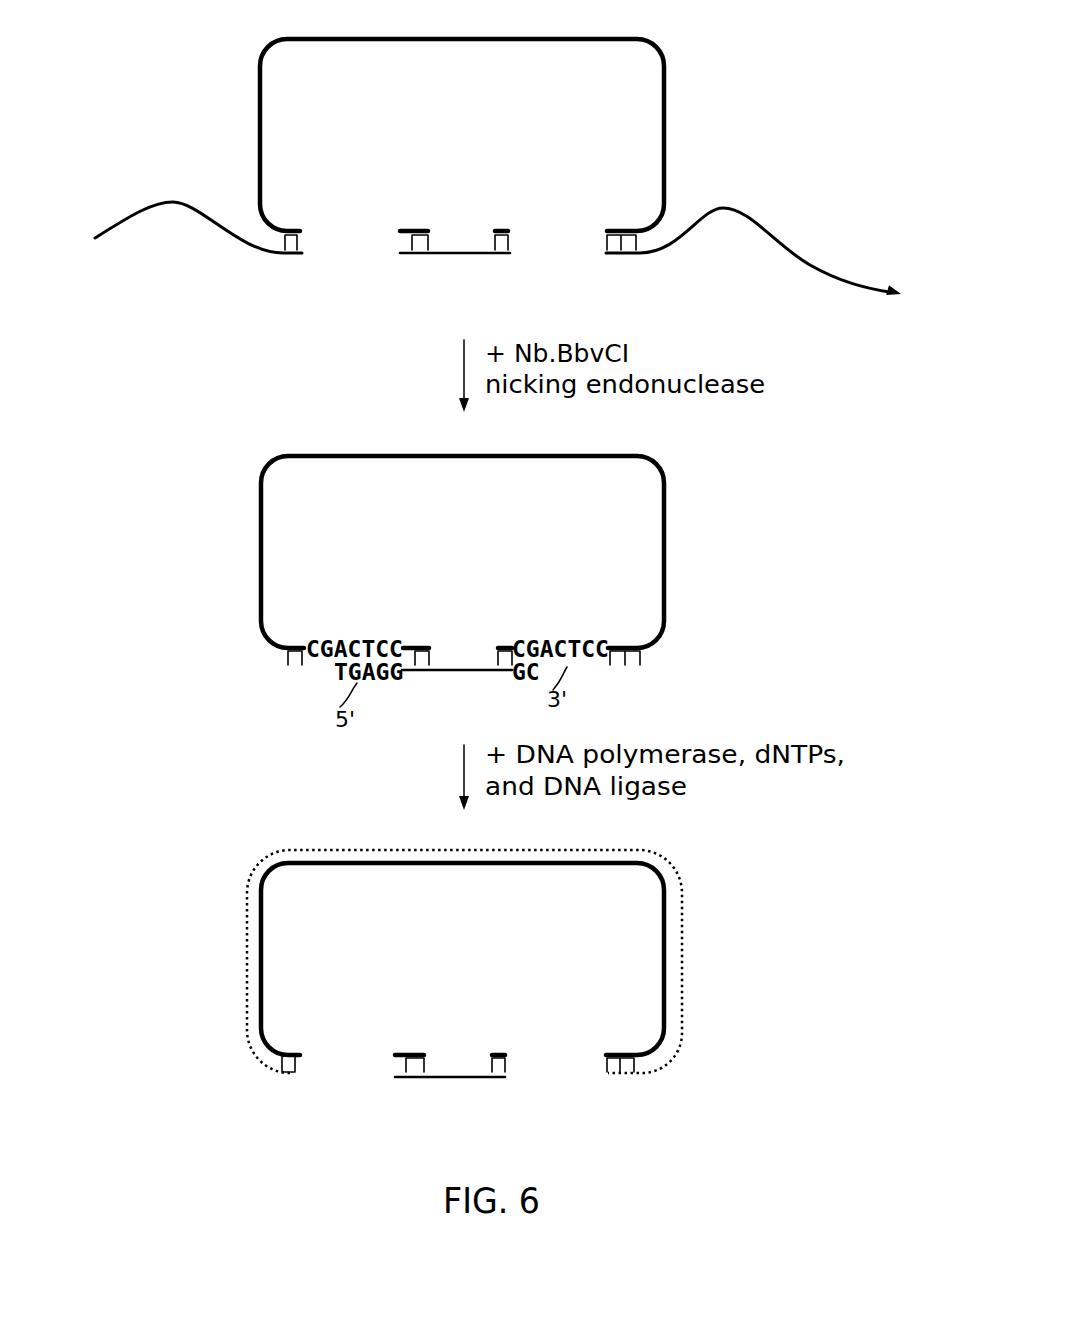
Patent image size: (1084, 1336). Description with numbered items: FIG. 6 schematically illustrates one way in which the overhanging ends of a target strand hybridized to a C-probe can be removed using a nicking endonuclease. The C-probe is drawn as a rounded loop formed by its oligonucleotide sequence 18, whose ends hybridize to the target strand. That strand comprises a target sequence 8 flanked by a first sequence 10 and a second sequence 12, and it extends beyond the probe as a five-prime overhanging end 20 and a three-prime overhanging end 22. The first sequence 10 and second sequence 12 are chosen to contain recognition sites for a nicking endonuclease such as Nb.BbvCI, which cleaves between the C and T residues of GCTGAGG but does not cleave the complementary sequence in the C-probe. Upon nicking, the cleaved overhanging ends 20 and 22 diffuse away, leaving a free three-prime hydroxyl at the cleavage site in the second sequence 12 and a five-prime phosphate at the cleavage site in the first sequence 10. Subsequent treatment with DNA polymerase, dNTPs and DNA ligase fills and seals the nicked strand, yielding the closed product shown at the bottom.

The oligonucleotide sequence 18 is at (446, 81).
The 5' overhanging end 20 is at (166, 186).
The 3' overhanging end 22 is at (768, 200).
The first sequence 10 is at (285, 263).
The target sequence 8 is at (433, 263).
The second sequence 12 is at (495, 263).